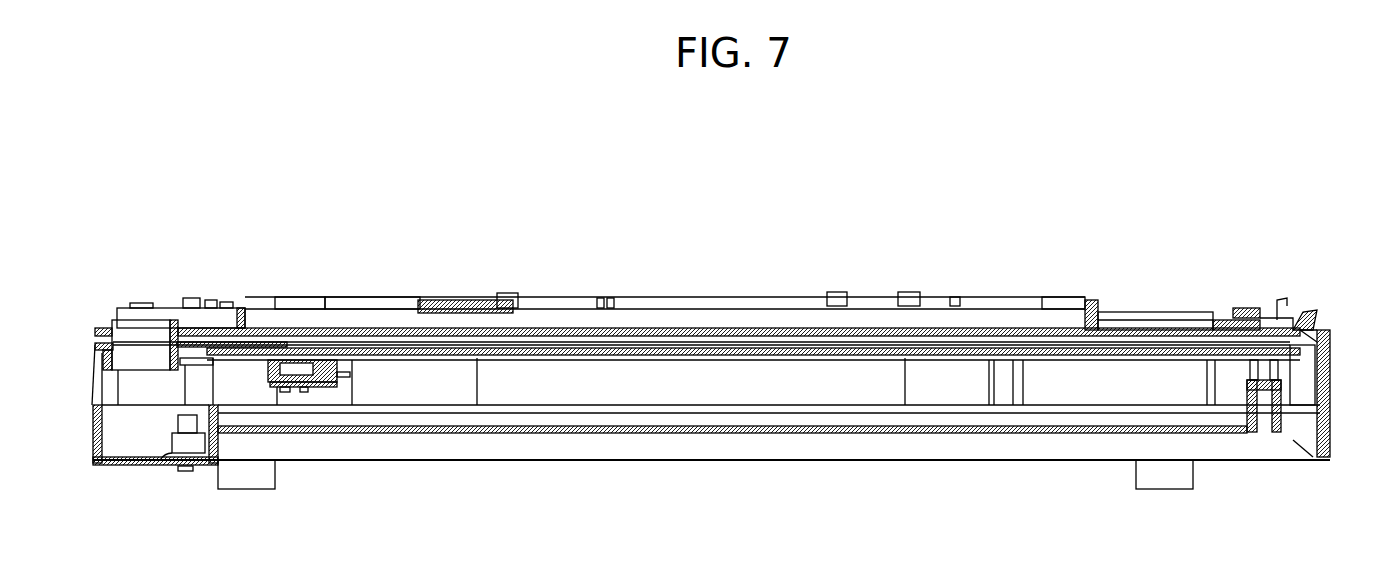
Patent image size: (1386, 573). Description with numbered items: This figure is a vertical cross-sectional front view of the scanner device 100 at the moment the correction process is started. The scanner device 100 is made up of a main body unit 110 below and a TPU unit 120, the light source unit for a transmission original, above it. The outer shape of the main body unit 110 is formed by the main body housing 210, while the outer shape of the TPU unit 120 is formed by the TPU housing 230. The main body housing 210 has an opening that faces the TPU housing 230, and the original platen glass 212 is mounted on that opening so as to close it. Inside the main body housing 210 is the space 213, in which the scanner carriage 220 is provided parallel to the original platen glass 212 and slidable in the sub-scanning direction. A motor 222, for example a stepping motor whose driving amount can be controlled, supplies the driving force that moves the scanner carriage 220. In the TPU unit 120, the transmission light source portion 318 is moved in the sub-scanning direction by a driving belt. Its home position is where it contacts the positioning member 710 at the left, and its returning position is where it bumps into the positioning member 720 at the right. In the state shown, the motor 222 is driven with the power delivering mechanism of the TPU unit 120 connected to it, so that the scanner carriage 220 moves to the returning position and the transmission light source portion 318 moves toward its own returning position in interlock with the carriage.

The scanner device 100 is at (774, 170).
The main body unit 110 is at (90, 476).
The TPU unit 120 is at (105, 294).
The main body housing 210 is at (1330, 460).
The original platen glass 212 is at (1005, 340).
The space 213 is at (1062, 392).
The scanner carriage 220 is at (318, 393).
The motor 222 is at (168, 456).
The TPU housing 230 is at (1317, 318).
The transmission light source portion 318 is at (462, 299).
The positioning member 710 is at (246, 308).
The positioning member 720 is at (1092, 300).